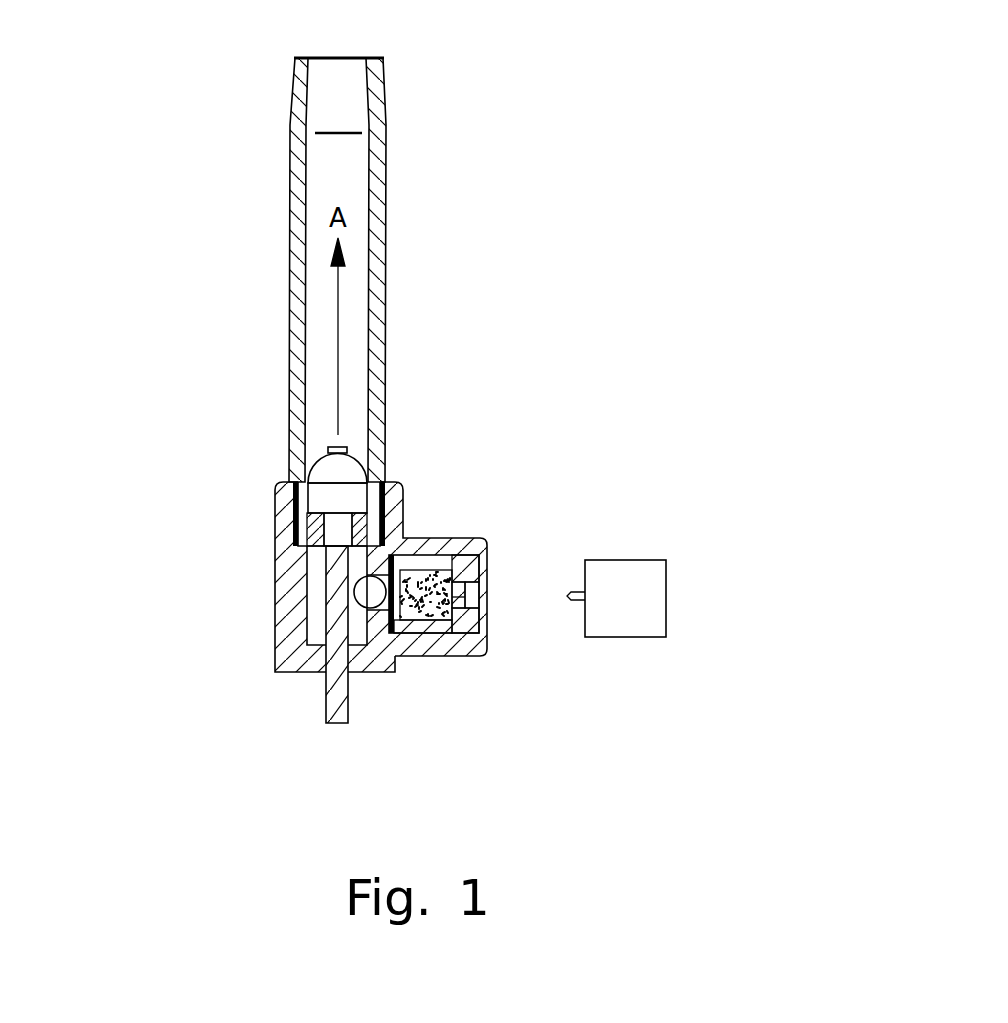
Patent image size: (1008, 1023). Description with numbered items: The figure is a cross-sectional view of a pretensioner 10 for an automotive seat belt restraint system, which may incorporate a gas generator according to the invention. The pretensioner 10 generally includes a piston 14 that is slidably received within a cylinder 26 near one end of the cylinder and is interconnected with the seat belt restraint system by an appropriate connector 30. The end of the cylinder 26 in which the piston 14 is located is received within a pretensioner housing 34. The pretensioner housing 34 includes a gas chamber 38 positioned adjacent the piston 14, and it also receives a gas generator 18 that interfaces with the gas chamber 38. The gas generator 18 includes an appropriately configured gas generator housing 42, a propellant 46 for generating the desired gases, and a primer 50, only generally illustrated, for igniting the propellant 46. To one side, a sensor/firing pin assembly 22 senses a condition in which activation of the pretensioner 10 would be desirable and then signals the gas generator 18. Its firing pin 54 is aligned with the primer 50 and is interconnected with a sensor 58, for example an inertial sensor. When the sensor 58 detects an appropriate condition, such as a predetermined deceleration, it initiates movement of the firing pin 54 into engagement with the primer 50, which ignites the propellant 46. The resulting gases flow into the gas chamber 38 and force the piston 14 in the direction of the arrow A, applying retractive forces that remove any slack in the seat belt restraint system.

The pretensioner 10 is at (383, 78).
The piston 14 is at (330, 465).
The gas generator 18 is at (472, 547).
The sensor/firing pin assembly 22 is at (707, 570).
The cylinder 26 is at (385, 278).
The connector 30 is at (342, 697).
The pretensioner housing 34 is at (274, 607).
The gas chamber 38 is at (318, 585).
The gas generator housing 42 is at (487, 638).
The propellant 46 is at (418, 572).
The primer 50 is at (478, 597).
The firing pin 54 is at (563, 597).
The sensor 58 is at (666, 607).